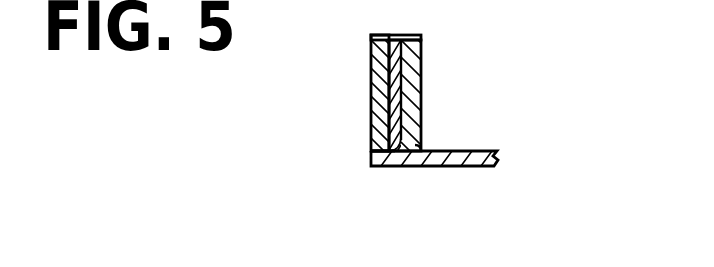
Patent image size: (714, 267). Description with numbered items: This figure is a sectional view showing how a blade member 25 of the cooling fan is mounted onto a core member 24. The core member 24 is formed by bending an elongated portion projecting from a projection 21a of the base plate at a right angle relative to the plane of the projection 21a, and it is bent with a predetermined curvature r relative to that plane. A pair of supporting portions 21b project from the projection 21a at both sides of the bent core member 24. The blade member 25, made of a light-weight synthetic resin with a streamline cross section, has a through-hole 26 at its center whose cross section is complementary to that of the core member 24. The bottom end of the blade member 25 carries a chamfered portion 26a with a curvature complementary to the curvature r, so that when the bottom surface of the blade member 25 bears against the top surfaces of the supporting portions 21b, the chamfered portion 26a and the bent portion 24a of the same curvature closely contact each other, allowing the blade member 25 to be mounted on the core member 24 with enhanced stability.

The projection 21a is at (473, 167).
The supporting portion 21b is at (384, 167).
The core member 24 is at (390, 103).
The bent portion 24a is at (403, 167).
The blade member 25 is at (422, 47).
The through-hole 26 is at (402, 74).
The chamfered portion 26a is at (393, 168).
The curvature r is at (407, 145).